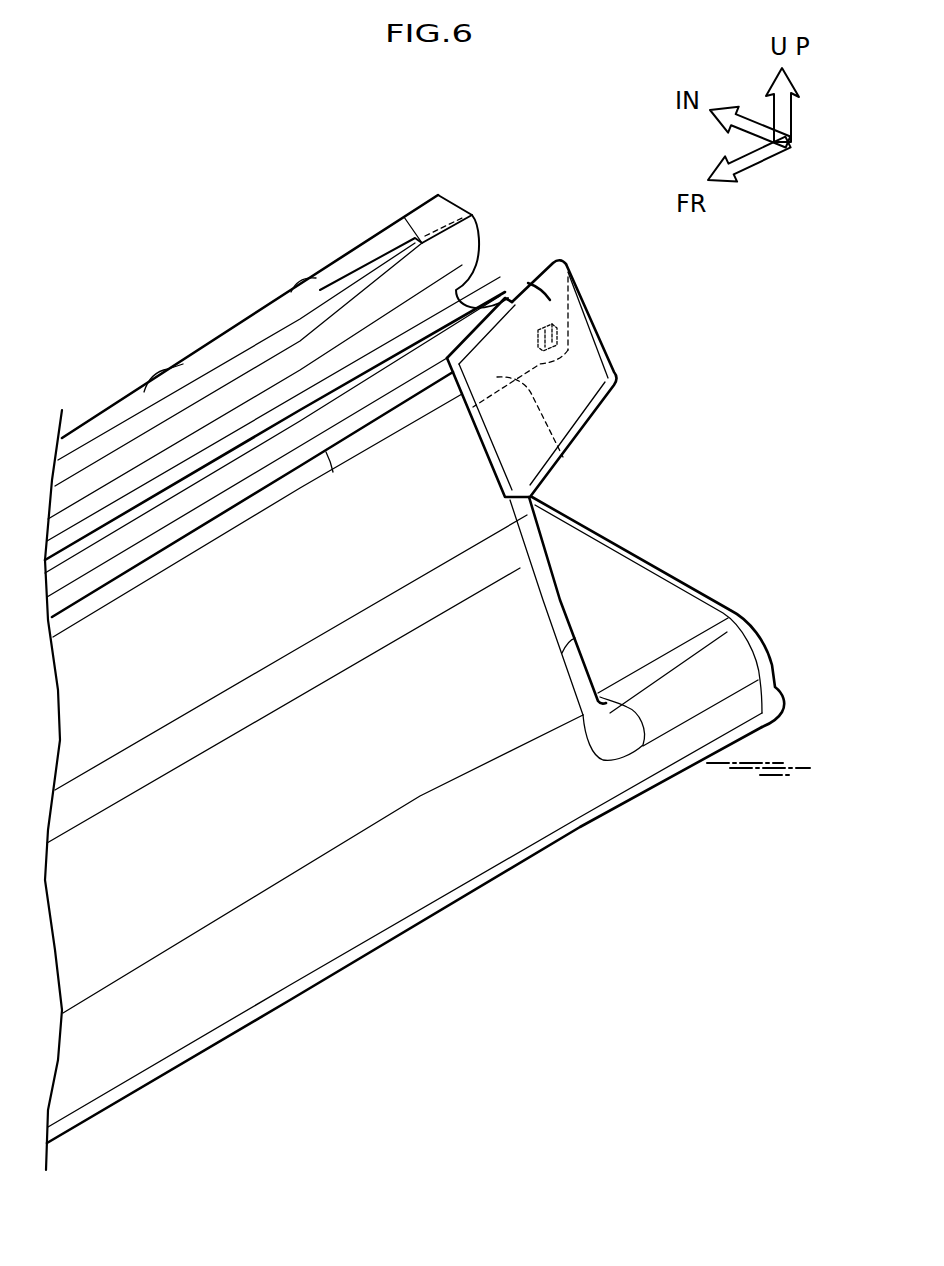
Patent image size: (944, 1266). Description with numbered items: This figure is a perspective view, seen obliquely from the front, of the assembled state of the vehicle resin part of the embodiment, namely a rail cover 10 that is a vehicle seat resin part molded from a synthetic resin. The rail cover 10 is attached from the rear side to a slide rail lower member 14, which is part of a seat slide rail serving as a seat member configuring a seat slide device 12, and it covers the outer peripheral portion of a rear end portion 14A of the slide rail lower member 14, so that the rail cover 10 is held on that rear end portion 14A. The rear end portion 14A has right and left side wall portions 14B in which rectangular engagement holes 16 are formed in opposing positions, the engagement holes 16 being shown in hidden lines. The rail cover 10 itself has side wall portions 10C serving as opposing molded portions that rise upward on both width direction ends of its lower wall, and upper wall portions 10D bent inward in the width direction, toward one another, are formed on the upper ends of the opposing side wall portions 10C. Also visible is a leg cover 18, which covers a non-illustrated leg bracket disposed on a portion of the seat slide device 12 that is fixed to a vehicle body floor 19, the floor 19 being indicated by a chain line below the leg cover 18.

The rail cover 10 is at (452, 152).
The side wall portions 10C is at (568, 402).
The upper wall portions 10D is at (358, 235).
The seat slide device 12 is at (778, 618).
The slide rail lower member 14 is at (116, 400).
The rear end portion 14A is at (463, 260).
The side wall portions 14B is at (563, 457).
The engagement holes 16 is at (569, 285).
The leg cover 18 is at (672, 612).
The vehicle body floor 19 is at (763, 762).